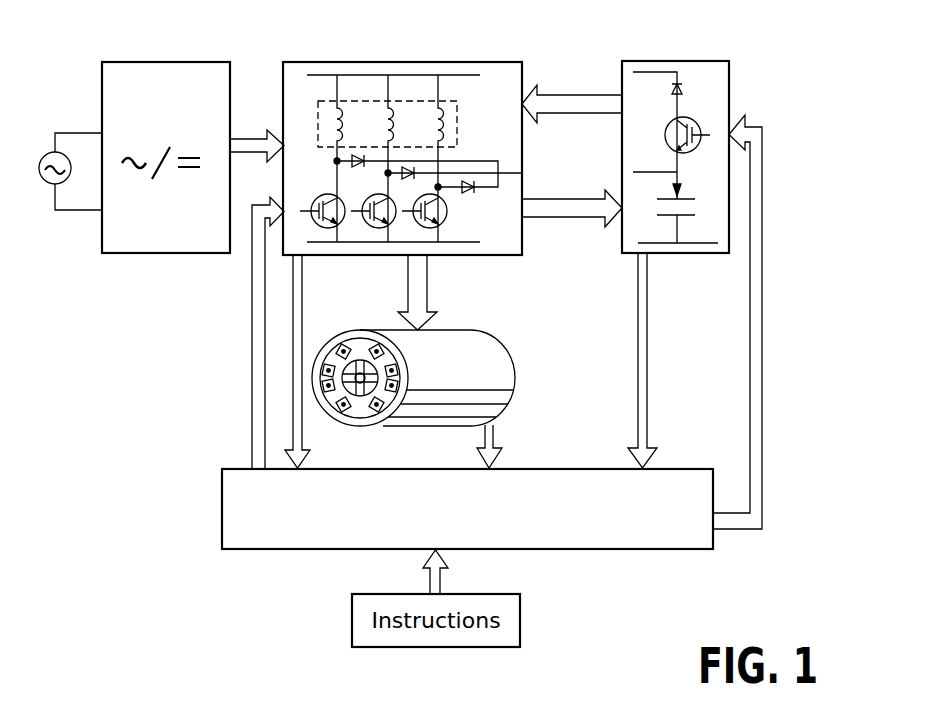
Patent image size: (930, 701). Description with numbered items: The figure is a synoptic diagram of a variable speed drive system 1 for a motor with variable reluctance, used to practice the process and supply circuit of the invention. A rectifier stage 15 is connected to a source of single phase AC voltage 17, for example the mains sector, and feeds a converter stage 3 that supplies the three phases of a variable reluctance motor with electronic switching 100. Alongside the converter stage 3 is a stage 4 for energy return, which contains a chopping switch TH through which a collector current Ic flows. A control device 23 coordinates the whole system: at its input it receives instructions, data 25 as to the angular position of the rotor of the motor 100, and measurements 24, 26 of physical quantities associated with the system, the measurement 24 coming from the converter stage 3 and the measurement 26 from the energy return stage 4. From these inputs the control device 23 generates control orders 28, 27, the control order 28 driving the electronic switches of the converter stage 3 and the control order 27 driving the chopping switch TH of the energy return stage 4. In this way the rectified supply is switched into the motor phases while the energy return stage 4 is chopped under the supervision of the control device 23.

The variable speed drive system 1 is at (788, 217).
The converter stage 3 is at (388, 62).
The energy return stage 4 is at (680, 131).
The rectifier stage 15 is at (152, 253).
The source of single phase AC voltage 17 is at (43, 183).
The control device 23 is at (222, 498).
The measurement 24 is at (302, 305).
The angular position data 25 is at (493, 437).
The measurement 26 is at (647, 395).
The control order 27 is at (762, 308).
The control order 28 is at (252, 400).
The variable reluctance motor with electronic switching 100 is at (515, 380).
The chopping switch TH is at (680, 118).
The collector current Ic is at (705, 169).